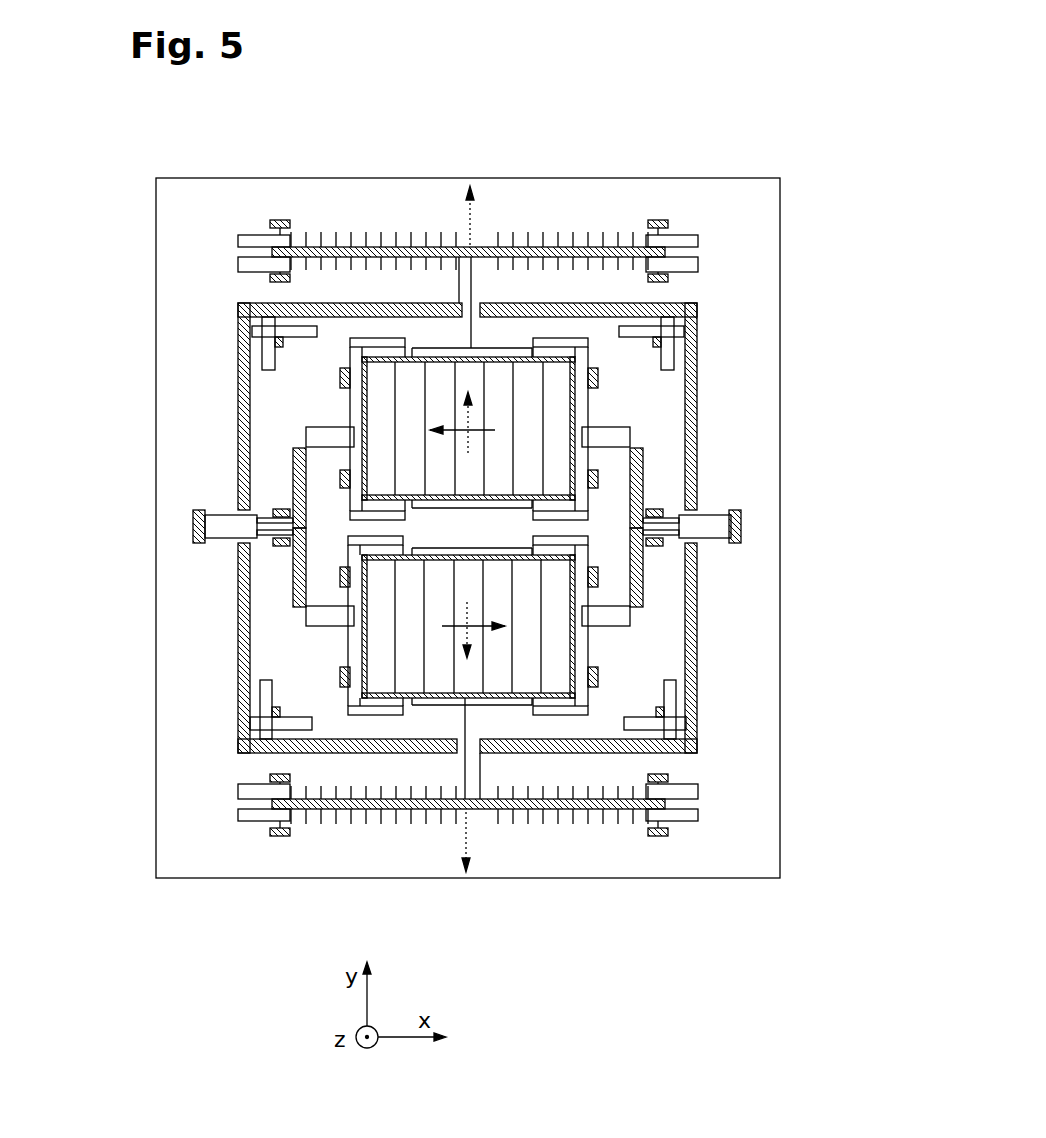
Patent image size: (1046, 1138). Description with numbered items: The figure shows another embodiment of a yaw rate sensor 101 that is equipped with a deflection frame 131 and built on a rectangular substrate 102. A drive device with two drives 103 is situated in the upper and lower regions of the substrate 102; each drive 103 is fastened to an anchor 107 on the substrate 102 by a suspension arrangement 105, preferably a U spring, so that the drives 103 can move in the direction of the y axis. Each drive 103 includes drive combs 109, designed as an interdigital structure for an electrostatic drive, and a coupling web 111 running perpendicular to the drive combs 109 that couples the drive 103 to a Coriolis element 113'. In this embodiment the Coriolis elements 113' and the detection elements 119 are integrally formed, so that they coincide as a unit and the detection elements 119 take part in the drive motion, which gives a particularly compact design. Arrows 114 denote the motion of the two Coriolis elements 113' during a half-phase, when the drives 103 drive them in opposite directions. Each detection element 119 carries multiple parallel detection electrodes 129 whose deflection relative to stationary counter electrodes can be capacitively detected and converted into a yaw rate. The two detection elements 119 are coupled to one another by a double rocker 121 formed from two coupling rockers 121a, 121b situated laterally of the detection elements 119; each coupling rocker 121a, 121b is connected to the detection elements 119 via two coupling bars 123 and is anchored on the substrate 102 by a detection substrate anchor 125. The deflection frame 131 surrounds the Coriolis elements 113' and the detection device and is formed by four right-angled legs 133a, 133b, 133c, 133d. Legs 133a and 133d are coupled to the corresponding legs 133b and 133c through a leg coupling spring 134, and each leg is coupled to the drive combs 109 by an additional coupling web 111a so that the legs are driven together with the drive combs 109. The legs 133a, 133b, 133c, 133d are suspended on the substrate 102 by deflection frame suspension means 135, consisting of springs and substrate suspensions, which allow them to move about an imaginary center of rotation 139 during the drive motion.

The yaw rate sensor 101 is at (795, 130).
The substrate 102 is at (780, 184).
The drive 103 is at (240, 240).
The suspension arrangement 105 is at (252, 238).
The anchor 107 is at (280, 220).
The drive comb 109 is at (378, 338).
The coupling web 111 is at (548, 360).
The additional coupling web 111a is at (445, 348).
The Coriolis element 113' is at (513, 529).
The arrow 114 is at (445, 905).
The detection element 119 is at (560, 372).
The double rocker 121 is at (697, 430).
The coupling rocker 121a is at (193, 527).
The coupling rocker 121b is at (697, 565).
The coupling bar 123 is at (330, 440).
The detection substrate anchor 125 is at (275, 546).
The detection electrode 129 is at (543, 400).
The deflection frame 131 is at (238, 405).
The leg 133a is at (697, 405).
The leg 133b is at (697, 612).
The leg 133c is at (393, 642).
The leg 133d is at (248, 440).
The leg coupling spring 134 is at (215, 530).
The deflection frame suspension means 135 is at (262, 330).
The imaginary center of rotation 139 is at (275, 342).